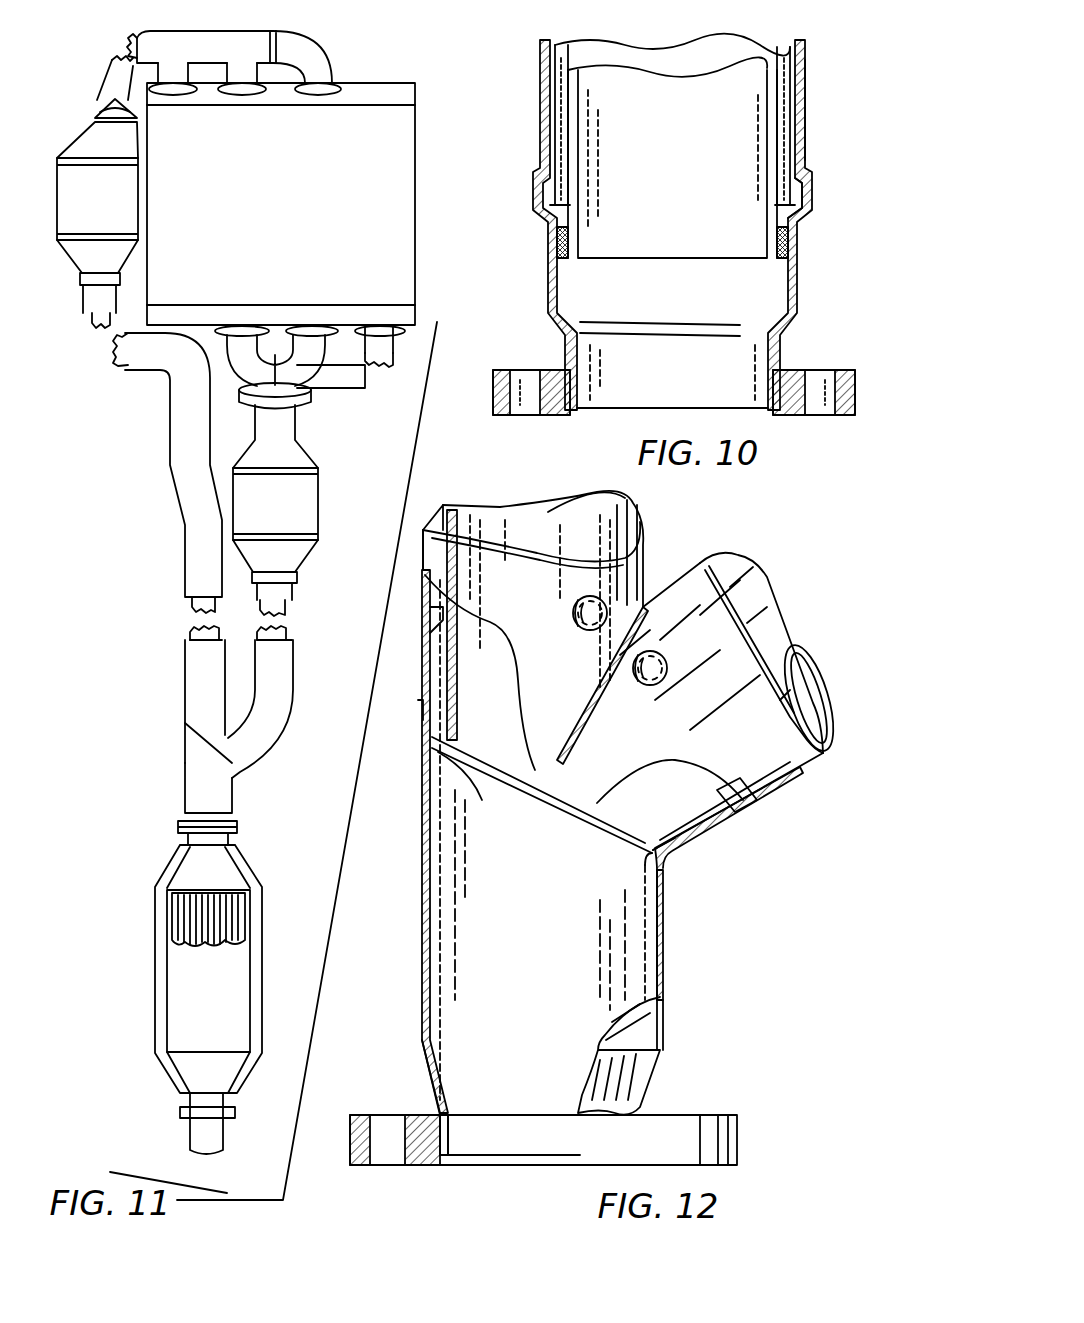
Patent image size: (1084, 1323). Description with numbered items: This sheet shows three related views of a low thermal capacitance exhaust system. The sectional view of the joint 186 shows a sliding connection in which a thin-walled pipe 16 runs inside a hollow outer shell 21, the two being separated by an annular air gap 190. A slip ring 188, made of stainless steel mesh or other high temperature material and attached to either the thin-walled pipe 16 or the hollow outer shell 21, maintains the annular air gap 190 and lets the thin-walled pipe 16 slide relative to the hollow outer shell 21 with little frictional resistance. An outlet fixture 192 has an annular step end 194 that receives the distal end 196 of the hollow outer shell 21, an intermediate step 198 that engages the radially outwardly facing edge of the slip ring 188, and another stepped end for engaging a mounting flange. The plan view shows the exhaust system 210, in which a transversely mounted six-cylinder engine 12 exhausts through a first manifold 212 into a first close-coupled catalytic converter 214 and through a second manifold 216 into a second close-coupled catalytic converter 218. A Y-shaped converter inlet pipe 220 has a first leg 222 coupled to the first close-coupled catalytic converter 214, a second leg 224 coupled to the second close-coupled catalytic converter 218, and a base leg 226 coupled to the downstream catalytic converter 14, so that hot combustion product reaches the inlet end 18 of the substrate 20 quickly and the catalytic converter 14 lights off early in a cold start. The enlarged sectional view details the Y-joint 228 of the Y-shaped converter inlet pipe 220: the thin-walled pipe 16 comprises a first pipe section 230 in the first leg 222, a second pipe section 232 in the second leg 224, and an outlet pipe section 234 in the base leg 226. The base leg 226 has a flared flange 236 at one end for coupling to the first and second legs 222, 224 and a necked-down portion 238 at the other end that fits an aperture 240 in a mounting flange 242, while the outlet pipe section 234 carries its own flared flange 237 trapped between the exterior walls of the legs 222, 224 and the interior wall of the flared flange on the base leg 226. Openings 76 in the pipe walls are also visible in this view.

In FIG. 11, the engine 12 is at (392, 76).
In FIG. 11, the catalytic converter 14 is at (148, 930).
In FIG. 11, the thin-walled pipe 16 is at (130, 44).
In FIG. 10, the thin-walled pipe 16 is at (688, 66).
In FIG. 12, the thin-walled pipe 16 is at (800, 658).
In FIG. 11, the inlet end 18 is at (205, 910).
In FIG. 11, the substrate 20 is at (228, 930).
In FIG. 11, the hollow outer shell 21 is at (92, 92).
In FIG. 10, the hollow outer shell 21 is at (608, 44).
In FIG. 12, the hollow outer shell 21 is at (437, 553).
In FIG. 12, the opening 76 is at (575, 615).
In FIG. 10, the joint 186 is at (520, 115).
In FIG. 10, the slip ring 188 is at (792, 247).
In FIG. 10, the annular air gap 190 is at (566, 60).
In FIG. 10, the outlet fixture 192 is at (553, 338).
In FIG. 10, the annular step end 194 is at (808, 190).
In FIG. 10, the distal end 196 is at (806, 142).
In FIG. 10, the intermediate step 198 is at (785, 308).
In FIG. 11, the exhaust system 210 is at (130, 495).
In FIG. 11, the first manifold 212 is at (322, 38).
In FIG. 11, the first close-coupled catalytic converter 214 is at (80, 134).
In FIG. 11, the second manifold 216 is at (330, 405).
In FIG. 11, the second close-coupled catalytic converter 218 is at (320, 520).
In FIG. 11, the Y-shaped converter inlet pipe 220 is at (176, 660).
In FIG. 11, the first leg 222 is at (168, 486).
In FIG. 12, the first leg 222 is at (652, 570).
In FIG. 11, the second leg 224 is at (298, 697).
In FIG. 12, the second leg 224 is at (782, 800).
In FIG. 11, the base leg 226 is at (185, 770).
In FIG. 12, the base leg 226 is at (670, 1040).
In FIG. 11, the Y-joint 228 is at (244, 775).
In FIG. 12, the Y-joint 228 is at (708, 1003).
In FIG. 12, the first pipe section 230 is at (510, 520).
In FIG. 12, the second pipe section 232 is at (757, 595).
In FIG. 12, the outlet pipe section 234 is at (648, 963).
In FIG. 12, the flared flange 236 is at (424, 702).
In FIG. 12, the flared flange 237 is at (452, 760).
In FIG. 12, the necked-down portion 238 is at (428, 1070).
In FIG. 12, the aperture 240 is at (447, 1160).
In FIG. 12, the mounting flange 242 is at (745, 1148).